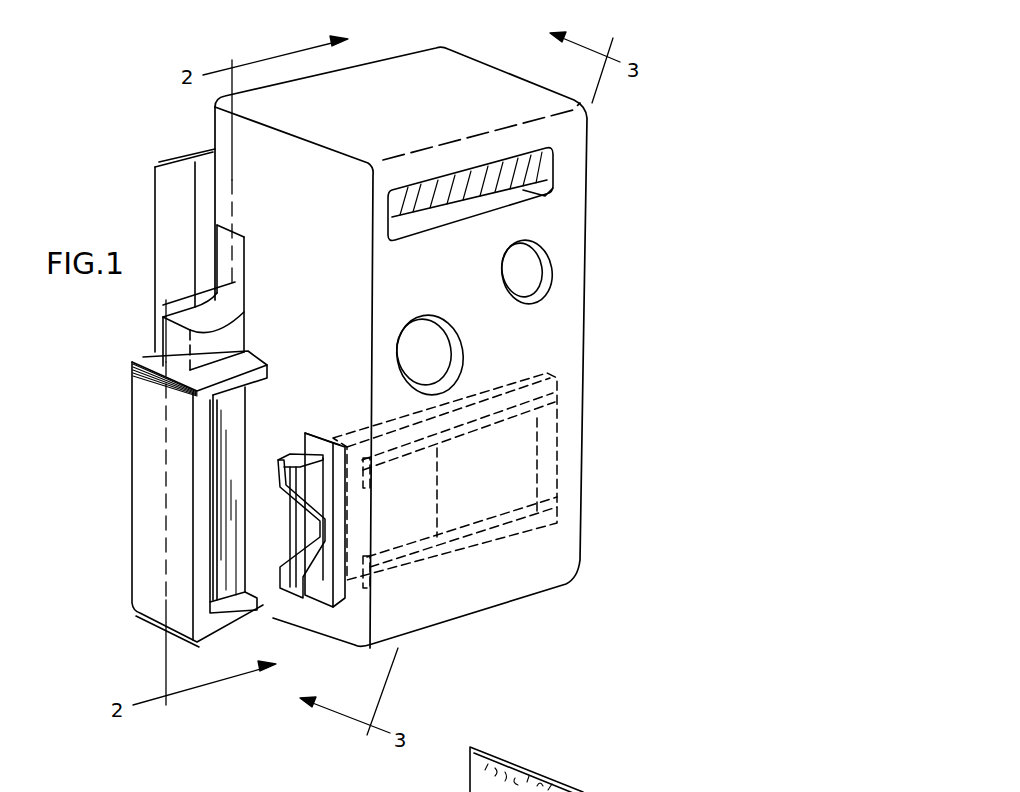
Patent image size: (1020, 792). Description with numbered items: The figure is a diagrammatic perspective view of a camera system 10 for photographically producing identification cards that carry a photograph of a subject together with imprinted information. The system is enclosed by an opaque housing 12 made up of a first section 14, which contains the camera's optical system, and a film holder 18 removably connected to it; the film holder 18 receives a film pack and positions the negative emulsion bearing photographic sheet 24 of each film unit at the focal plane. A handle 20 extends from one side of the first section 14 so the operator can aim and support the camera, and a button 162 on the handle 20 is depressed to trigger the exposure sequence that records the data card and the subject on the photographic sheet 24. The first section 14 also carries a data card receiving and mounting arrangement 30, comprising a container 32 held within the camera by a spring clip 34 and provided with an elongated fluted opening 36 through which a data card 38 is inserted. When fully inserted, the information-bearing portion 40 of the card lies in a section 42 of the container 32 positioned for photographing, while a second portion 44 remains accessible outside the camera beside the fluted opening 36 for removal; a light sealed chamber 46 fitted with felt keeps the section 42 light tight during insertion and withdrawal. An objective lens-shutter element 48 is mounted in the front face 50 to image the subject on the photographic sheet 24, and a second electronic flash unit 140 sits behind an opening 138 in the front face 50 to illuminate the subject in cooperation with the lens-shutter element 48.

The camera system 10 is at (599, 296).
The housing 12 is at (480, 62).
The first section 14 is at (573, 255).
The film holder 18 is at (155, 207).
The handle 20 is at (145, 445).
The photographic sheet 24 is at (617, 791).
The data card receiving and mounting arrangement 30 is at (307, 612).
The container 32 is at (550, 373).
The spring clip 34 is at (443, 542).
The elongated fluted opening 36 is at (275, 595).
The data card 38 is at (290, 520).
The portion of the data card 40 is at (523, 457).
The section of the container 42 is at (550, 487).
The second portion of the data card 44 is at (295, 458).
The light sealed chamber 46 is at (343, 585).
The objective lens-shutter element 48 is at (432, 337).
The front face 50 is at (527, 137).
The opening 138 is at (547, 197).
The second electronic flash unit 140 is at (510, 173).
The button 162 is at (247, 342).